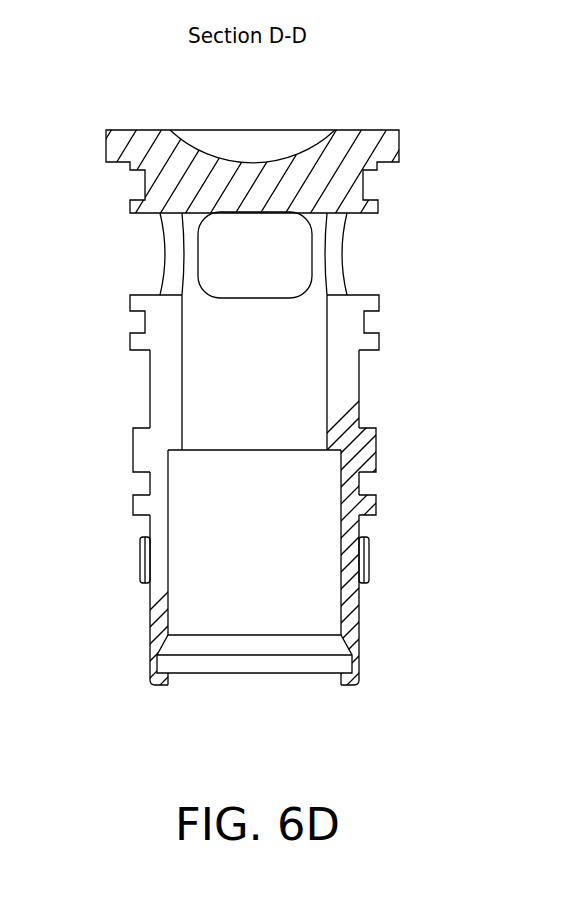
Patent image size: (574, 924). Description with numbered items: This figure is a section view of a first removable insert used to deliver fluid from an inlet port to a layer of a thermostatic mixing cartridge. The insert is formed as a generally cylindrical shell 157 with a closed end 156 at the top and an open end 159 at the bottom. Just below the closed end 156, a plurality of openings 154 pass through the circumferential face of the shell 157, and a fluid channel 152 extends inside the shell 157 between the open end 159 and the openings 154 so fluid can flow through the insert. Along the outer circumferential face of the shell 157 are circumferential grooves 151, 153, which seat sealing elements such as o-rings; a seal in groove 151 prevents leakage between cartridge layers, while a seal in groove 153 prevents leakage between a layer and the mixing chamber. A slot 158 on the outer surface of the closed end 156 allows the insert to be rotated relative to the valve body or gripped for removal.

The circumferential groove 151 is at (137, 322).
The fluid channel 152 is at (249, 618).
The circumferential groove 153 is at (140, 485).
The openings 154 is at (203, 248).
The closed end 156 is at (132, 138).
The shell 157 is at (345, 410).
The slot 158 is at (255, 145).
The open end 159 is at (330, 683).